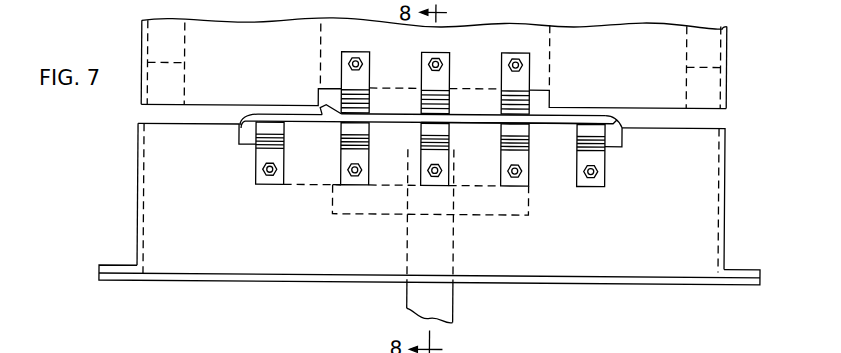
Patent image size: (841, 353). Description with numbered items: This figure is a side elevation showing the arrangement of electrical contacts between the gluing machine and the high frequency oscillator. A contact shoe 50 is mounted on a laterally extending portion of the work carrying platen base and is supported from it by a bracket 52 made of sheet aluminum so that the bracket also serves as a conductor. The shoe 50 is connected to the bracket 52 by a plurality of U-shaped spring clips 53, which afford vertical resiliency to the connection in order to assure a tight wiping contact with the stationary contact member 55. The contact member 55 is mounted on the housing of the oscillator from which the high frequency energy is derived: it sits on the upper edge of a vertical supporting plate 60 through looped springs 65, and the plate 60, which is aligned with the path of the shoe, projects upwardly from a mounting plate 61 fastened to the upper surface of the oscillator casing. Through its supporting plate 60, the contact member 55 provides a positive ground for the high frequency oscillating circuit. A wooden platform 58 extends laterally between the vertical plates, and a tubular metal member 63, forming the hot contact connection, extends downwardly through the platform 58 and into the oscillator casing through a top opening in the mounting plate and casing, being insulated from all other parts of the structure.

The contact shoe 50 is at (546, 111).
The bracket 52 is at (650, 30).
The U-shaped spring clip 53 is at (528, 97).
The stationary contact member 55 is at (554, 122).
The wooden platform 58 is at (526, 213).
The vertical supporting plate 60 is at (688, 135).
The mounting plate 61 is at (609, 277).
The tubular metal member 63 is at (445, 306).
The looped spring 65 is at (506, 133).